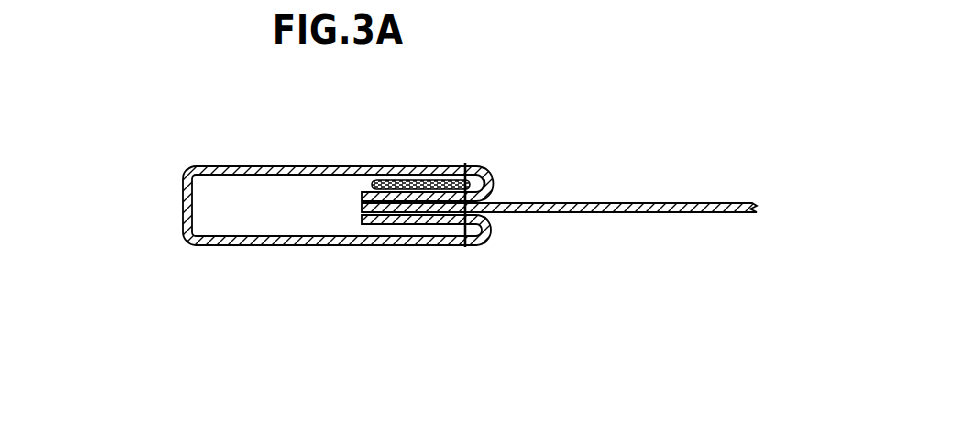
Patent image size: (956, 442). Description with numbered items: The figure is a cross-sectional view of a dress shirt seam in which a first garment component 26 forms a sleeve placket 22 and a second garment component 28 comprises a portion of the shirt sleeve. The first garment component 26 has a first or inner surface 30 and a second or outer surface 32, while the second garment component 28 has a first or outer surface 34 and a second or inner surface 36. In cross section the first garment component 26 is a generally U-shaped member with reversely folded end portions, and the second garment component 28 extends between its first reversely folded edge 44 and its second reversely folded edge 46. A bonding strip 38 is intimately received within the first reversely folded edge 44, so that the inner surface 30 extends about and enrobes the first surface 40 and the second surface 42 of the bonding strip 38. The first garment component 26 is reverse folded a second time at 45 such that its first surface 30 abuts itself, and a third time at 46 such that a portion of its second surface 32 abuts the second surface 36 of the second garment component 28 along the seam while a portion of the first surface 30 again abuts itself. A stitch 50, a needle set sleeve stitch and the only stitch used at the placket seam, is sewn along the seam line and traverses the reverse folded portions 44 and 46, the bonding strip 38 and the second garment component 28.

The sleeve placket 22 is at (333, 212).
The first garment component 26 is at (333, 208).
The second garment component 28 is at (765, 167).
The first or inner surface 30 is at (333, 208).
The second or outer surface 32 is at (333, 208).
The first or outer surface 34 is at (563, 210).
The second or inner surface 36 is at (563, 210).
The bonding strip 38 is at (370, 185).
The first surface of the bonding strip 40 is at (406, 152).
The second surface of the bonding strip 42 is at (420, 182).
The first reversely folded edge 44 is at (376, 208).
The second reverse fold 45 is at (333, 208).
The second reversely folded edge 46 is at (495, 235).
The stitch 50 is at (465, 165).